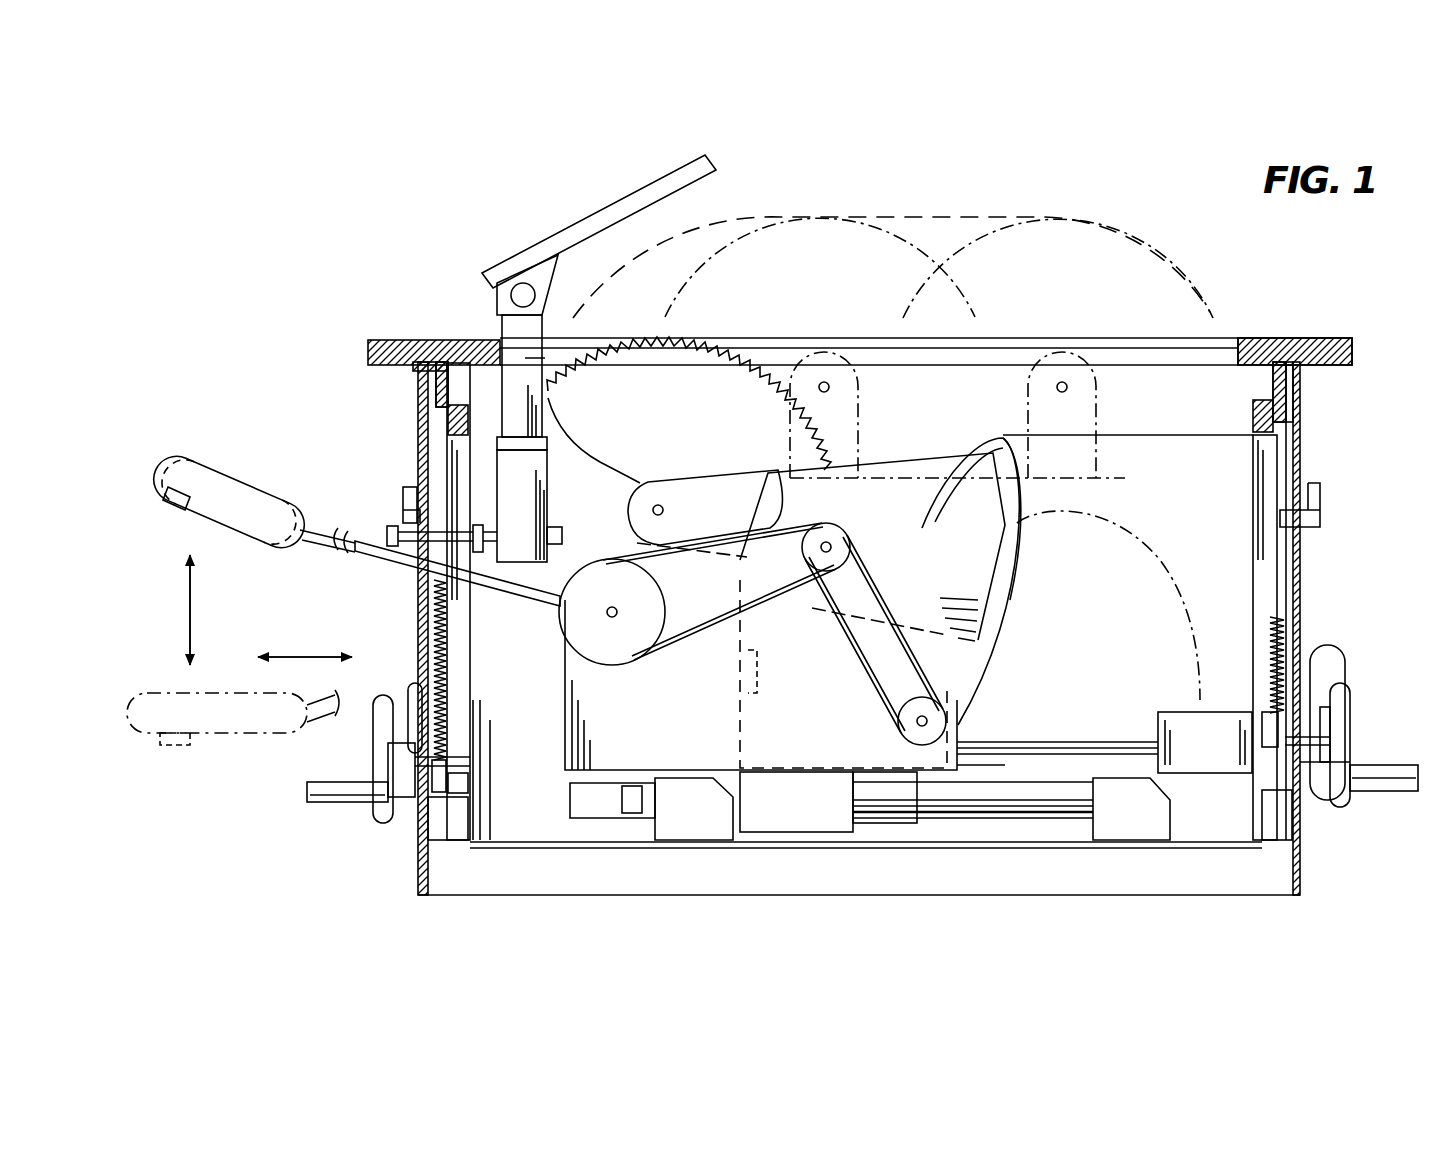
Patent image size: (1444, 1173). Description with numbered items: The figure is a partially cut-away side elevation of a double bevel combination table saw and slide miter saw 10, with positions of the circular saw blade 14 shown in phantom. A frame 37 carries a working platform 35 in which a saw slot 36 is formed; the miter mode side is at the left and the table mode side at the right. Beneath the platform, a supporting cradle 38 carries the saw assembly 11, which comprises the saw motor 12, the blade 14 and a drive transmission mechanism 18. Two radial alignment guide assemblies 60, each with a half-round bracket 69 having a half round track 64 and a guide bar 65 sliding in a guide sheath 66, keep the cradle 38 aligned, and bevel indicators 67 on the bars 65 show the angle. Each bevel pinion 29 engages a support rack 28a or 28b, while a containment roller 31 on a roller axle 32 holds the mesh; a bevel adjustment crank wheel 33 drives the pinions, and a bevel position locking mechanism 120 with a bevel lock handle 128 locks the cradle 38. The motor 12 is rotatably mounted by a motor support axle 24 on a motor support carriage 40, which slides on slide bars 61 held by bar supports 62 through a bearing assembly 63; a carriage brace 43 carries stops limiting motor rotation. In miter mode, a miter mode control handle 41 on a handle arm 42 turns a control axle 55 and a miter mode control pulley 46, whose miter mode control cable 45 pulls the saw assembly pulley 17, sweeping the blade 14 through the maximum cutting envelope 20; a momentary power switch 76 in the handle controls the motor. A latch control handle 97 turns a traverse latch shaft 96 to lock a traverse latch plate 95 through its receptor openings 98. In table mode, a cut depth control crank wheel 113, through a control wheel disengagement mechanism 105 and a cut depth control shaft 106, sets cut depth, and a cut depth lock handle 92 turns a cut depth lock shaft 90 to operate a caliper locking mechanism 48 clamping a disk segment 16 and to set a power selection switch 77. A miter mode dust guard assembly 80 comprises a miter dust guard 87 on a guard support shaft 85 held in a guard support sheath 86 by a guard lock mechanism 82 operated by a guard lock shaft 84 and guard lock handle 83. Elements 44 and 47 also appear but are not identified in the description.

The double bevel combination table saw and slide miter saw 10 is at (1295, 330).
The saw assembly 11 is at (895, 489).
The saw motor 12 is at (984, 570).
The circular saw blade 14 is at (814, 226).
The disk segment 16 is at (1000, 510).
The saw assembly pulley 17 is at (812, 605).
The drive transmission mechanism 18 is at (684, 476).
The maximum cutting envelope 20 is at (905, 212).
The motor support axle 24 is at (801, 546).
The support rack 28a is at (420, 846).
The support rack 28b is at (1300, 844).
The bevel pinion 29 is at (458, 746).
The containment roller 31 is at (447, 839).
The roller axle 32 is at (1257, 848).
The bevel adjustment crank wheel 33 is at (383, 821).
The working platform 35 is at (1247, 336).
The saw slot 36 is at (1085, 338).
The frame 37 is at (1300, 607).
The supporting cradle 38 is at (1189, 483).
The motor support carriage 40 is at (634, 725).
The miter mode control handle 41 is at (236, 481).
The handle arm 42 is at (368, 563).
The carriage brace 43 is at (749, 757).
The drive belt 44 is at (868, 671).
The miter mode control cable 45 is at (693, 624).
The miter mode control pulley 46 is at (636, 653).
The belt 47 is at (905, 716).
The caliper locking mechanism 48 is at (897, 758).
The control axle 55 is at (611, 607).
The radial alignment guide assembly 60 is at (428, 396).
The slide bar 61 is at (1040, 801).
The bar support 62 is at (717, 828).
The bearing assembly 63 is at (814, 815).
The half round track 64 is at (444, 416).
The guide bar 65 is at (466, 420).
The guide sheath 66 is at (455, 466).
The bevel indicator 67 is at (405, 494).
The half-round bracket 69 is at (428, 356).
The momentary power switch 76 is at (178, 500).
The power selection switch 77 is at (723, 728).
The miter mode dust guard assembly 80 is at (548, 233).
The guard lock mechanism 82 is at (558, 480).
The guard lock handle 83 is at (335, 546).
The guard lock shaft 84 is at (556, 480).
The guard support shaft 85 is at (542, 357).
The guard support sheath 86 is at (583, 411).
The miter dust guard 87 is at (648, 190).
The cut depth lock shaft 90 is at (716, 753).
The cut depth lock handle 92 is at (1342, 670).
The traverse latch plate 95 is at (625, 816).
The traverse latch shaft 96 is at (457, 786).
The latch control handle 97 is at (395, 771).
The receptor opening 98 is at (634, 812).
The control wheel disengagement mechanism 105 is at (1185, 711).
The cut depth control shaft 106 is at (1073, 745).
The cut depth control crank wheel 113 is at (1342, 726).
The bevel position locking mechanism 120 is at (460, 711).
The bevel lock handle 128 is at (410, 692).